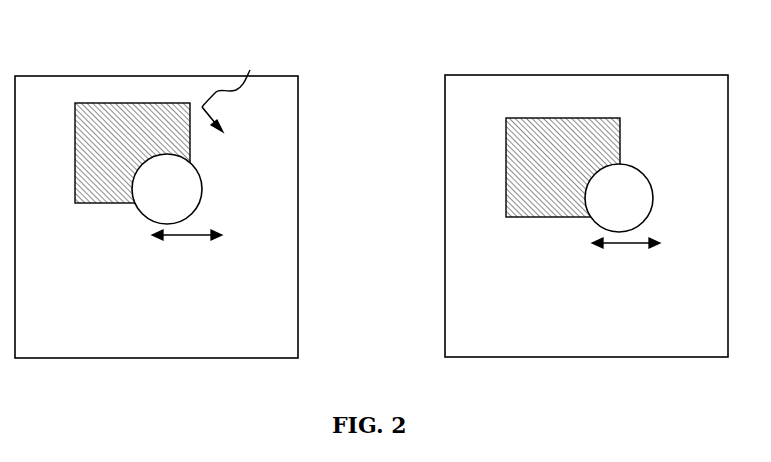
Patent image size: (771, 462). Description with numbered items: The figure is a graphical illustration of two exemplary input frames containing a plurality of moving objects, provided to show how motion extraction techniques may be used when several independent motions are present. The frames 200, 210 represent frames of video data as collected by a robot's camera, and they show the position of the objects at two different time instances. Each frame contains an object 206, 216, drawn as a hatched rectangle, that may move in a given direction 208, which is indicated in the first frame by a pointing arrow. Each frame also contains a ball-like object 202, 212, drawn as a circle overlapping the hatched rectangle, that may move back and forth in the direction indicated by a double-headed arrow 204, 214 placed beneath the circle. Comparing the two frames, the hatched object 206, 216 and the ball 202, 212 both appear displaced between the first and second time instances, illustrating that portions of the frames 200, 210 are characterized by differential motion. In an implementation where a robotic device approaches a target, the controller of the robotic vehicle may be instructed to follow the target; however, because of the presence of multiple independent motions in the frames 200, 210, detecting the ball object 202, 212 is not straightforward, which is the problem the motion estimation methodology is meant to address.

The frame 200 is at (64, 110).
The object 202 is at (176, 195).
The arrow 204 is at (197, 235).
The object 206 is at (124, 136).
The direction 208 is at (233, 91).
The frame 210 is at (494, 110).
The object 212 is at (627, 205).
The arrow 214 is at (642, 243).
The object 216 is at (554, 151).